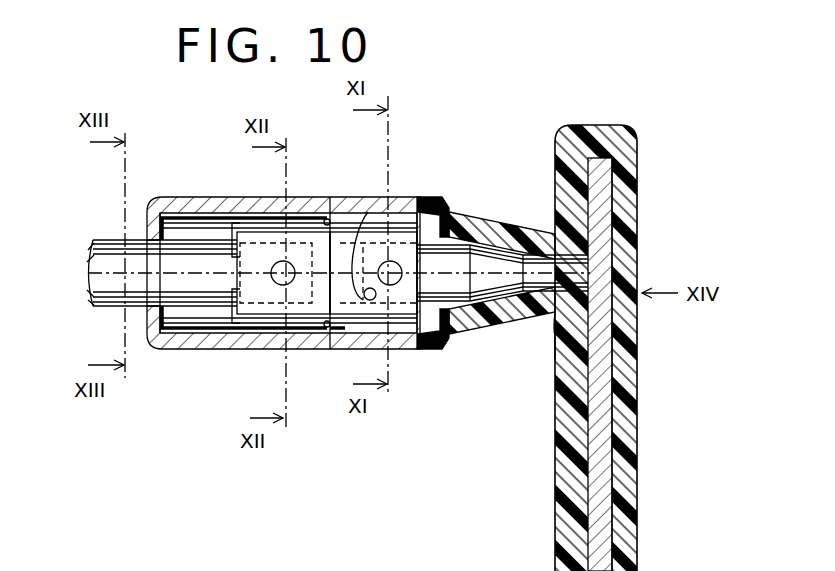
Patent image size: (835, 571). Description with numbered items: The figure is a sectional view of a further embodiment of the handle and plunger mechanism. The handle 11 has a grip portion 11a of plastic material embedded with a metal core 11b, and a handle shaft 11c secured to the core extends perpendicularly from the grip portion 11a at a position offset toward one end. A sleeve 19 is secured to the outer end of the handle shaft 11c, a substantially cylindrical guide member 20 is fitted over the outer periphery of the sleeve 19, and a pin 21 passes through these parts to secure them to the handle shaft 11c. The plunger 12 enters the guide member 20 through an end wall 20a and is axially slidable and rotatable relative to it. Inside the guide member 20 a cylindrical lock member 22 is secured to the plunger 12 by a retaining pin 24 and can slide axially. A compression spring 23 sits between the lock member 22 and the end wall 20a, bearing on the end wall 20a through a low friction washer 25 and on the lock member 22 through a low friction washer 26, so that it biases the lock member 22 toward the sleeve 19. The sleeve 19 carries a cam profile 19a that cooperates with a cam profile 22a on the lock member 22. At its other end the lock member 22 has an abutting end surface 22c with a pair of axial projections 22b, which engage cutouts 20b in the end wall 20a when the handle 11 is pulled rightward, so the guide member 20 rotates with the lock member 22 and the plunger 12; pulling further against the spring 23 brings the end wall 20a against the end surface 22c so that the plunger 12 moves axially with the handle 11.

The handle 11 is at (599, 118).
The grip portion 11a is at (626, 377).
The metal core 11b is at (596, 426).
The handle shaft 11c is at (433, 297).
The plunger 12 is at (110, 253).
The sleeve 19 is at (405, 197).
The cam profile 19a is at (367, 212).
The guide member 20 is at (357, 200).
The end wall 20a is at (148, 222).
The cutouts 20b is at (127, 288).
The pin 21 is at (393, 281).
The lock member 22 is at (350, 252).
The cam profile 22a is at (343, 330).
The axial projections 22b is at (217, 283).
The abutting end surface 22c is at (223, 237).
The compression spring 23 is at (183, 217).
The retaining pin 24 is at (279, 280).
The low friction washer 25 is at (157, 330).
The low friction washer 26 is at (327, 198).